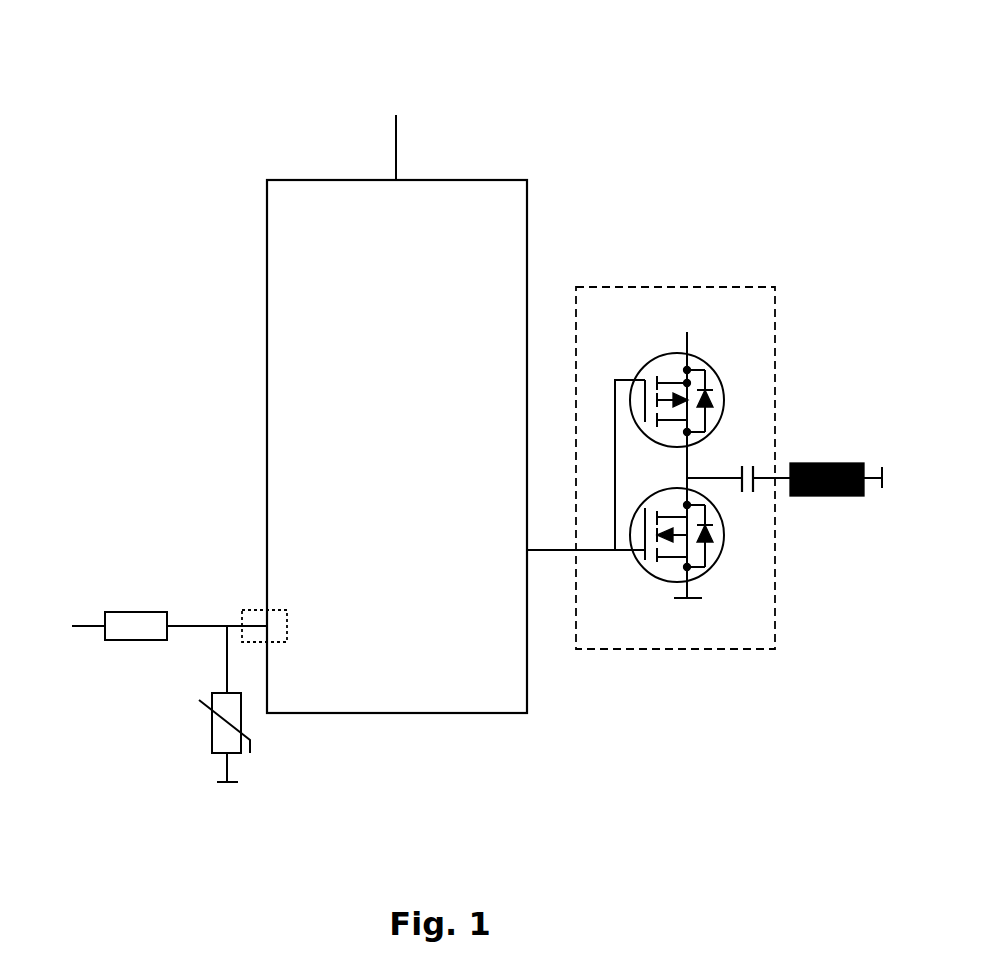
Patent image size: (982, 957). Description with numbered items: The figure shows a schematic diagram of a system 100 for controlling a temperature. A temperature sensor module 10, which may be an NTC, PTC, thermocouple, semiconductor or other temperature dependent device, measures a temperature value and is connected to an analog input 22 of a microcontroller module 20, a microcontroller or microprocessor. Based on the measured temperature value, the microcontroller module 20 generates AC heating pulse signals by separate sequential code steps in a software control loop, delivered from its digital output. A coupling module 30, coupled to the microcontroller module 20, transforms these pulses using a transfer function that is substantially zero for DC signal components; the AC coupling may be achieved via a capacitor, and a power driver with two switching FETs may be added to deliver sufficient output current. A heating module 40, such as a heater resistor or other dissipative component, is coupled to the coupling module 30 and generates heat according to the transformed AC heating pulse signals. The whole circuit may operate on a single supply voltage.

The system for controlling a temperature 100 is at (699, 146).
The temperature sensor module 10 is at (220, 685).
The microcontroller module 20 is at (470, 202).
The analog input 22 is at (248, 610).
The coupling module 30 is at (722, 297).
The heating module 40 is at (810, 463).